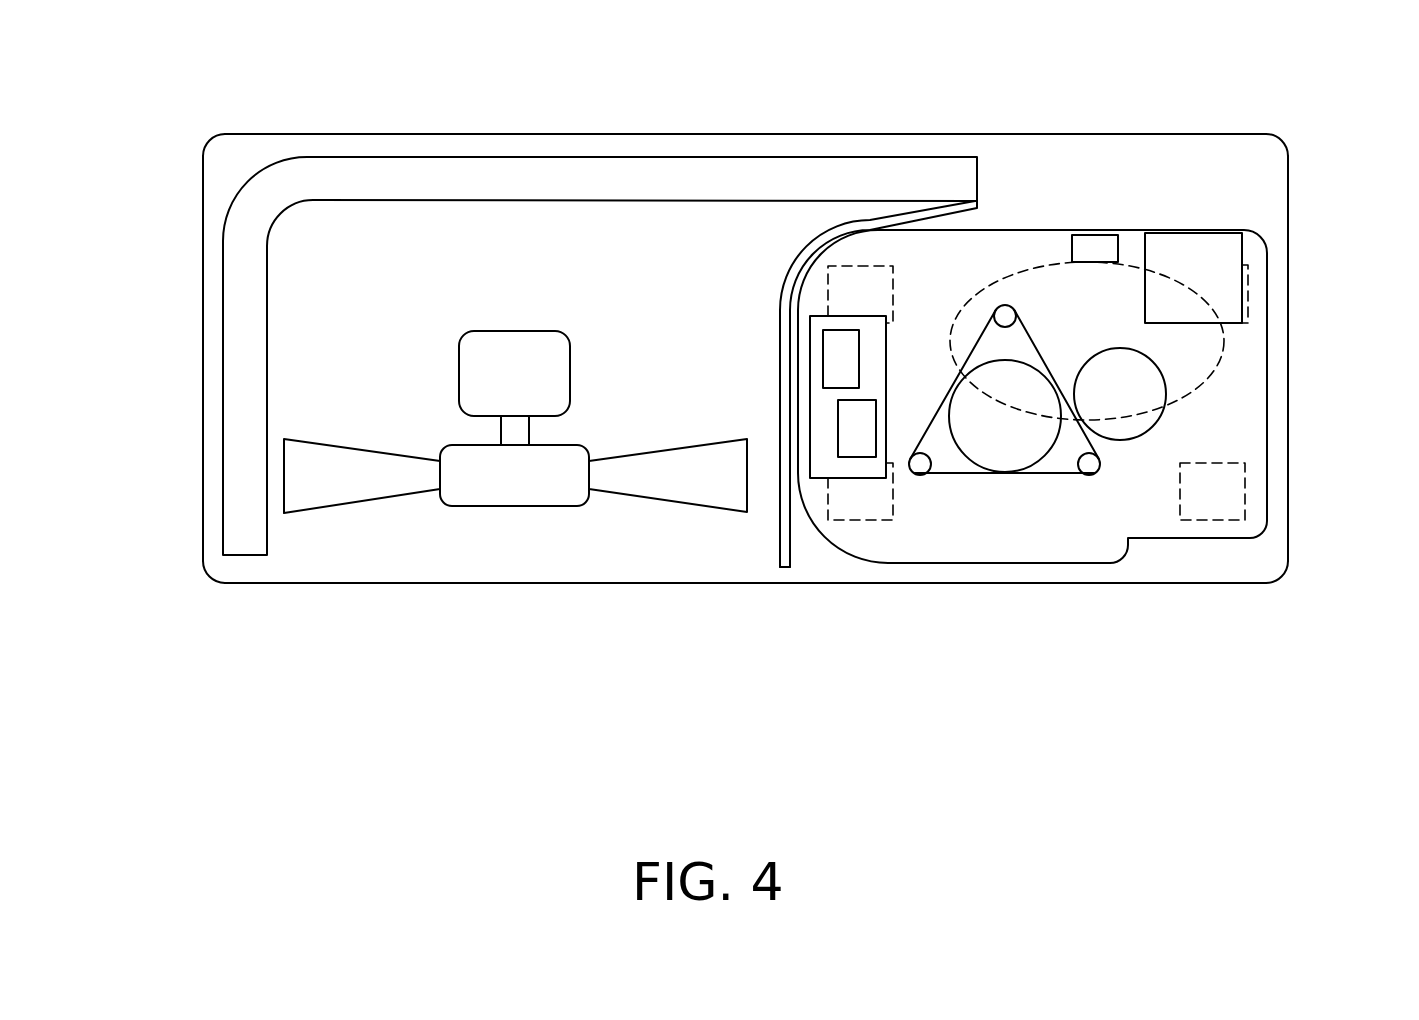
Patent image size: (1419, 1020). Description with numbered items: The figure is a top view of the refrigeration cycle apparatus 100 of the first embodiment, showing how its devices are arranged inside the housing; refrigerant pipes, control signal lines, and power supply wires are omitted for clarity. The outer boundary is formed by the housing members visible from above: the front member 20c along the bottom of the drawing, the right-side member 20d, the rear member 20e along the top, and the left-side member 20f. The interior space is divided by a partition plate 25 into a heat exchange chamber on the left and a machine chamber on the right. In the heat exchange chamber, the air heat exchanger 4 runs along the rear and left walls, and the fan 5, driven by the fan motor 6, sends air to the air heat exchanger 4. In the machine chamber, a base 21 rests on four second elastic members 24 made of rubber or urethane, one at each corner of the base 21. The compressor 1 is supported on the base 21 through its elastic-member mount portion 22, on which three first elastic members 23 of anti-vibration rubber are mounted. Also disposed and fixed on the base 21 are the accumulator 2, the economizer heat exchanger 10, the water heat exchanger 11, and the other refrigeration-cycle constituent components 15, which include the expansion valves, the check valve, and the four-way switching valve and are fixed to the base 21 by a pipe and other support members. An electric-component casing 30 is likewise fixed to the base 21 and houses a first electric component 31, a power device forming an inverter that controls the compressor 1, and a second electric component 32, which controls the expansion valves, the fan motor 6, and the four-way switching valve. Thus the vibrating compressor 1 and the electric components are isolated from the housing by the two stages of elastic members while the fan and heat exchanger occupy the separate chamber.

The refrigeration cycle apparatus 100 is at (1342, 188).
The compressor 1 is at (1004, 438).
The accumulator 2 is at (1160, 418).
The air heat exchanger 4 is at (373, 172).
The fan 5 is at (356, 487).
The fan motor 6 is at (512, 331).
The economizer heat exchanger 10 is at (1095, 244).
The water heat exchanger 11 is at (1200, 248).
The other refrigeration-cycle constituent components 15 is at (1226, 340).
The front member 20c is at (1007, 584).
The right-side member 20d is at (1289, 353).
The rear member 20e is at (640, 133).
The left-side member 20f is at (202, 356).
The base 21 is at (1268, 431).
The elastic-member mount portion 22 is at (1060, 458).
The first elastic member 23 is at (1001, 305).
The second elastic member 24 is at (860, 265).
The partition plate 25 is at (795, 259).
The electric-component casing 30 is at (810, 450).
The first electric component 31 is at (838, 450).
The second electric component 32 is at (823, 375).